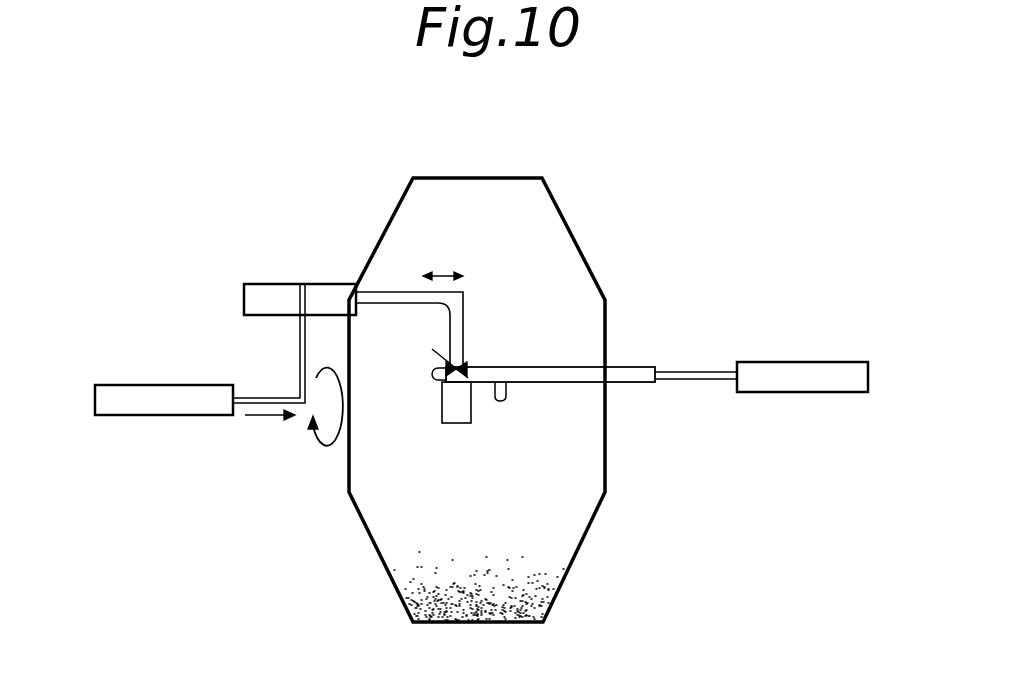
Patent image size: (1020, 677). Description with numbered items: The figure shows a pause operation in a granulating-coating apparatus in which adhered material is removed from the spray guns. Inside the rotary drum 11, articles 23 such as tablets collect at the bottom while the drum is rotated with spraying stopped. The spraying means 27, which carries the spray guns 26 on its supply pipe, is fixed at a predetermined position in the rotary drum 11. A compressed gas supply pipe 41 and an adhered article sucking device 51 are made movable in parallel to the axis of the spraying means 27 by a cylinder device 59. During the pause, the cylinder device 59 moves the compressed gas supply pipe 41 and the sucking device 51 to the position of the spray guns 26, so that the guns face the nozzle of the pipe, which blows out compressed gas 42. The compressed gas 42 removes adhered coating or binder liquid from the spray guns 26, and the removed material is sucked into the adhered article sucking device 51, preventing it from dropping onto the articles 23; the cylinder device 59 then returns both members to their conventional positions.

The rotary drum 11 is at (543, 177).
The articles 23 is at (548, 598).
The spray gun 26 is at (507, 396).
The spraying means 27 is at (540, 365).
The compressed gas supply pipe 41 is at (470, 300).
The compressed gas 42 is at (438, 366).
The adhered article sucking device 51 is at (448, 328).
The cylinder device 59 is at (132, 397).